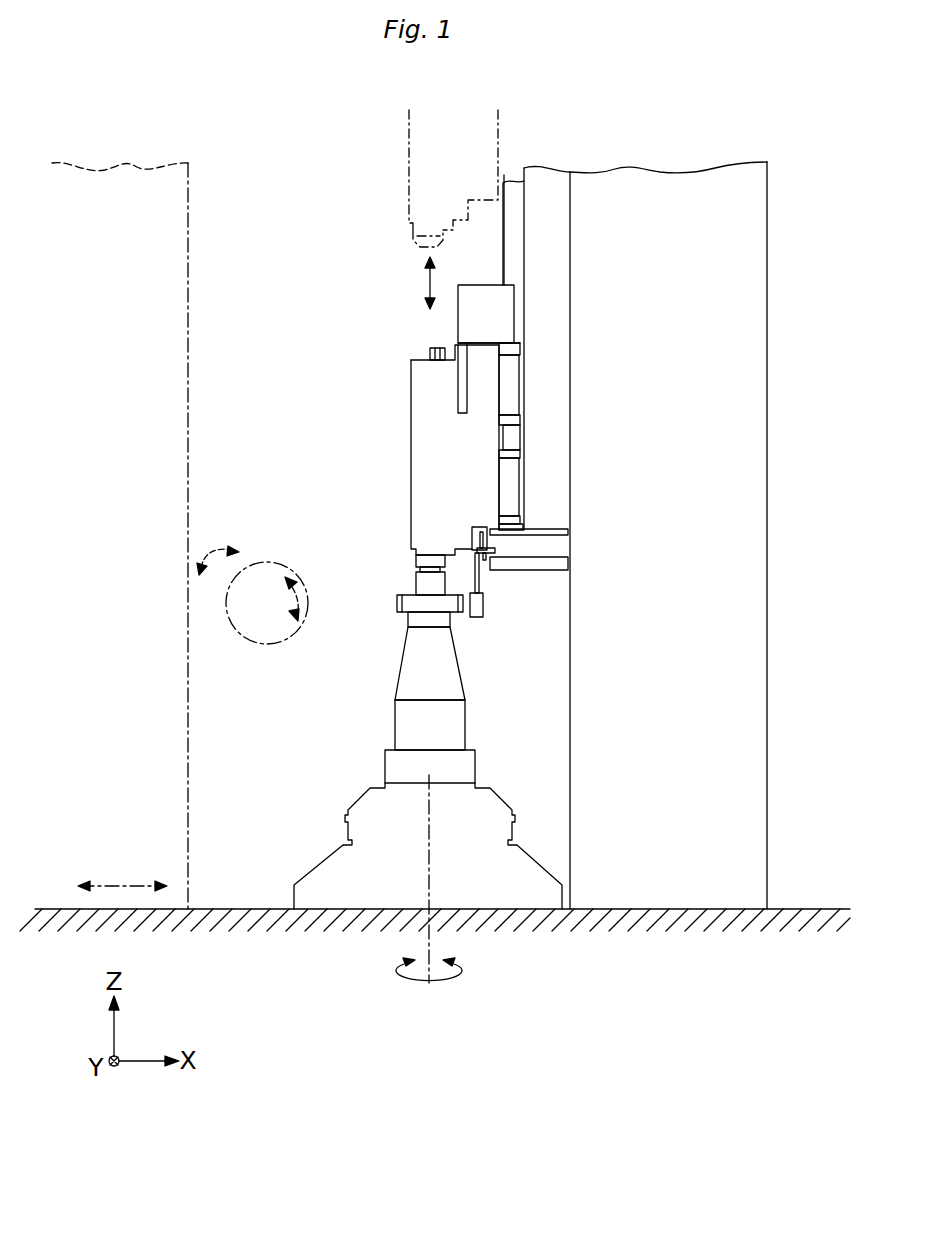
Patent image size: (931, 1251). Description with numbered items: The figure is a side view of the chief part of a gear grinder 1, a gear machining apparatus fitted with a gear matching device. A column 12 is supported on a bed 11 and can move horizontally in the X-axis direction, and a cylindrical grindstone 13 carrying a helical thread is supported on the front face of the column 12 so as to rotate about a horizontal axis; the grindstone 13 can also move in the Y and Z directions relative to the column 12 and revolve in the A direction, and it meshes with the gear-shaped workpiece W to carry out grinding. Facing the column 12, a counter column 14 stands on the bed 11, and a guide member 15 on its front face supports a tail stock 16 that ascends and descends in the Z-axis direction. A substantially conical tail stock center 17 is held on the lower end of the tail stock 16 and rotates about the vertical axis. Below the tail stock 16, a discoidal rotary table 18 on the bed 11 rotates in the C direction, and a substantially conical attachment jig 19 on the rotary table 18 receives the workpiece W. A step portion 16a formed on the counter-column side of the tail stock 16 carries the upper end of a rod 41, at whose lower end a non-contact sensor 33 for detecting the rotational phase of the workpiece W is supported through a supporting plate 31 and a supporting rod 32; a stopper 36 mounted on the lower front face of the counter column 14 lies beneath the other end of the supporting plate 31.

The gear grinder 1 is at (601, 156).
The bed 11 is at (815, 908).
The column 12 is at (123, 160).
The grindstone 13 is at (266, 562).
The counter column 14 is at (692, 172).
The guide member 15 is at (543, 168).
The tail stock 16 is at (408, 182).
The step portion 16a is at (492, 531).
The tail stock center 17 is at (413, 240).
The rotary table 18 is at (320, 862).
The attachment jig 19 is at (395, 728).
The supporting plate 31 is at (478, 545).
The supporting rod 32 is at (482, 588).
The sensor 33 is at (480, 618).
The stopper 36 is at (553, 572).
The rod 41 is at (475, 530).
The workpiece W is at (397, 605).
The A direction A is at (218, 544).
The C direction C is at (439, 963).